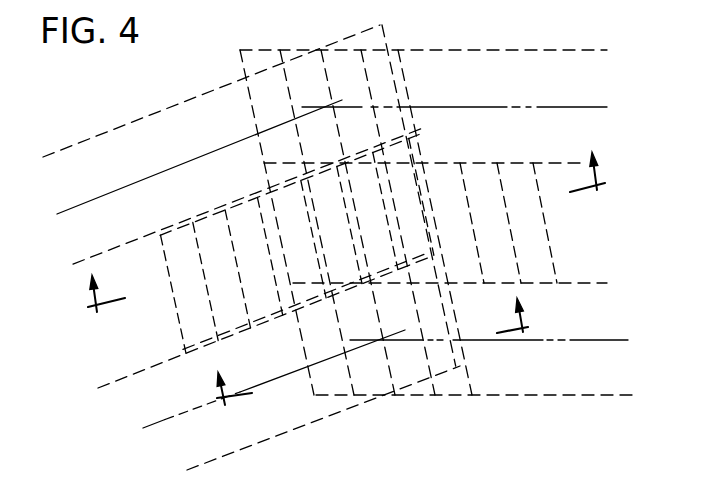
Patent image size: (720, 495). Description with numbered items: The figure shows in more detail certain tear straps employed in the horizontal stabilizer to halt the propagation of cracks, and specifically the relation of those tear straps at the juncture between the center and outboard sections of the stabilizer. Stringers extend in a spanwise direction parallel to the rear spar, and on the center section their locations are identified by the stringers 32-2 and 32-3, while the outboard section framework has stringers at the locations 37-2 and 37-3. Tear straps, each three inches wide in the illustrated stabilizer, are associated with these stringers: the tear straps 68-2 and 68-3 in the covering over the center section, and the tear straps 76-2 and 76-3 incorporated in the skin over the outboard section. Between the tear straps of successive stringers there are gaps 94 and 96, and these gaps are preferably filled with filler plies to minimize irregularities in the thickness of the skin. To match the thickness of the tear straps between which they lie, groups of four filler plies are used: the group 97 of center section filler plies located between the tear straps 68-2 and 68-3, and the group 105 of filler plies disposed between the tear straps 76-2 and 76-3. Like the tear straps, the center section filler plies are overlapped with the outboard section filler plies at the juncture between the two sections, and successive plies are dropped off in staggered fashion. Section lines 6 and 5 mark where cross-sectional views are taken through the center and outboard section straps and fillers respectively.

The center section tear strap 68-2 is at (537, 50).
The center section stringer 32-2 is at (597, 107).
The gap between center section tear straps 94 is at (577, 108).
The group of center section filler plies 97 is at (507, 161).
The center section tear strap 68-3 is at (580, 283).
The gap between outboard section tear straps 96 is at (578, 338).
The center section stringer 32-3 is at (612, 340).
The outboard section tear strap 76-2 is at (133, 120).
The outboard section stringer 37-2 is at (170, 168).
The group of outboard section filler plies 105 is at (208, 212).
The outboard section stringer 37-3 is at (158, 423).
The outboard section tear strap 76-3 is at (232, 455).
The section line 6- 6 is at (350, 242).
The section line 5- 5 is at (378, 363).